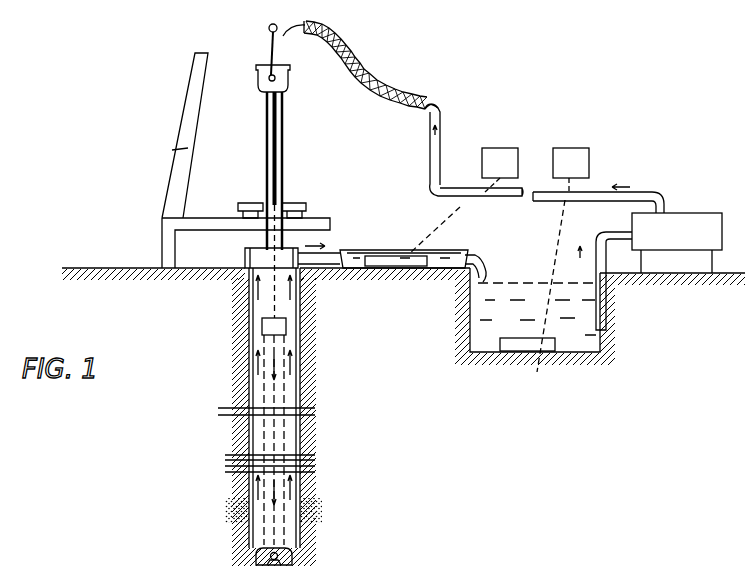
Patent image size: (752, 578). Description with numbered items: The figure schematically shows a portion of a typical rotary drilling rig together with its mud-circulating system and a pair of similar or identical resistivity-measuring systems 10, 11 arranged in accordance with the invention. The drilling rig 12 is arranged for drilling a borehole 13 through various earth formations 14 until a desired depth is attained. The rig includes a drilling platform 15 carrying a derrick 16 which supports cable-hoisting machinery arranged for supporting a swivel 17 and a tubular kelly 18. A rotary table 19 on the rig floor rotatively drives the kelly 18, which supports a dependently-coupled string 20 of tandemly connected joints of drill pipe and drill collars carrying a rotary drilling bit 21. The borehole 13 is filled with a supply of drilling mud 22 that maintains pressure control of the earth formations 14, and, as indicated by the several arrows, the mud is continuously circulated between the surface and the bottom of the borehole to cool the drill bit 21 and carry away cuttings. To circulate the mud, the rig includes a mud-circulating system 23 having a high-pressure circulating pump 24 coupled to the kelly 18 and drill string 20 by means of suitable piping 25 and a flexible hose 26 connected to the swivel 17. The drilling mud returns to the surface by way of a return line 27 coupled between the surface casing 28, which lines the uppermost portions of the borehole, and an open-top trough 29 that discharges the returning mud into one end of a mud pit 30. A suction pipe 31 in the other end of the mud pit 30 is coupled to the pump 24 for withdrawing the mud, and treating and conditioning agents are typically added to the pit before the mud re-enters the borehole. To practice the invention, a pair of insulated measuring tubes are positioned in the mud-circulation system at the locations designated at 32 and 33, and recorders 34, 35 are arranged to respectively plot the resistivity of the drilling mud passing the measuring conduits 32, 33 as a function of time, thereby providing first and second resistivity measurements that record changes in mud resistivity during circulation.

The resistivity-measuring system 10 is at (408, 240).
The resistivity-measuring system 11 is at (564, 286).
The drilling rig 12 is at (170, 78).
The borehole 13 is at (287, 442).
The earth formations 14 is at (321, 559).
The drilling platform 15 is at (204, 216).
The derrick 16 is at (175, 125).
The swivel 17 is at (284, 77).
The kelly 18 is at (285, 152).
The rotary table 19 is at (300, 206).
The drill string 20 is at (276, 394).
The rotary drilling bit 21 is at (250, 558).
The drilling mud 22 is at (245, 259).
The mud-circulating system 23 is at (668, 174).
The high-pressure circulating pump 24 is at (688, 244).
The piping 25 is at (427, 167).
The flexible hose 26 is at (383, 93).
The return line 27 is at (336, 248).
The surface casing 28 is at (300, 318).
The open-top trough 29 is at (444, 258).
The mud pit 30 is at (470, 334).
The suction pipe 31 is at (620, 232).
The measuring tube location 32 is at (400, 278).
The measuring tube location 33 is at (527, 372).
The recorder 34 is at (500, 148).
The recorder 35 is at (568, 148).